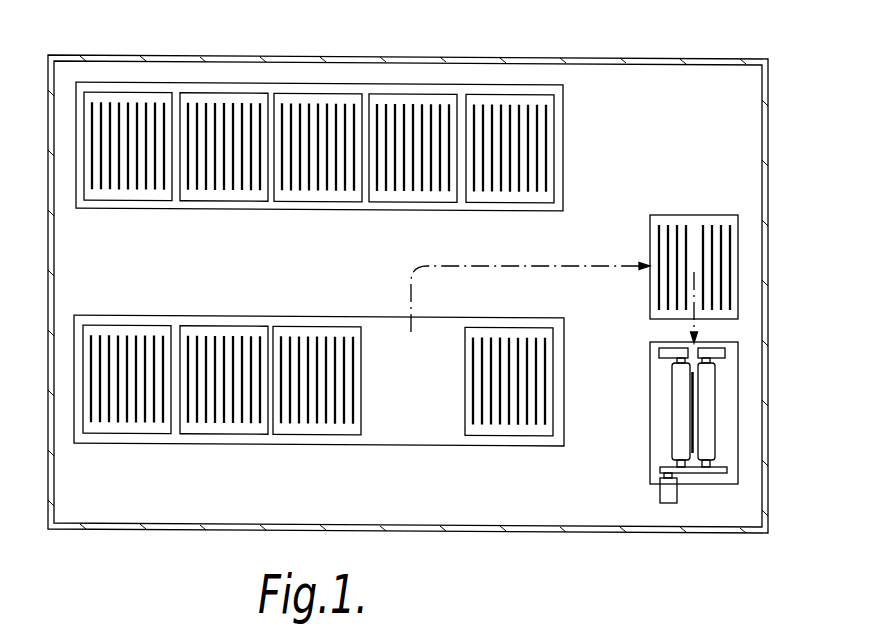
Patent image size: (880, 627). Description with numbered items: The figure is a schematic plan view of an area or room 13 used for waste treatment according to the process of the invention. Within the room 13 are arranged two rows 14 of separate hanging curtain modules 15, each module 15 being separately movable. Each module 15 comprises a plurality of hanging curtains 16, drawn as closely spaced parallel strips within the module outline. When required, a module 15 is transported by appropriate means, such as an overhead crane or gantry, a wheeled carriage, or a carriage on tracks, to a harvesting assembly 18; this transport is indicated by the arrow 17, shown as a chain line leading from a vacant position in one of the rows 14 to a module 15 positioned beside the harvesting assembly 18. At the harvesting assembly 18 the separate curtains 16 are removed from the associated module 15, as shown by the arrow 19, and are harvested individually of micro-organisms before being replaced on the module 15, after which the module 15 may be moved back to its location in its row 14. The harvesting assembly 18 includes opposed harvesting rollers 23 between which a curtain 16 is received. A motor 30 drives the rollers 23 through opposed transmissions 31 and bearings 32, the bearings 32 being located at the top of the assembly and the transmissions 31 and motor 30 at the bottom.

The area or room 13 is at (32, 212).
The rows 14 is at (268, 72).
The hanging curtain module 15 is at (556, 121).
The hanging curtain 16 is at (547, 159).
The arrow 17 is at (607, 264).
The harvesting assembly 18 is at (753, 392).
The arrow 19 is at (698, 337).
The harvesting rollers 23 is at (703, 413).
The motor 30 is at (666, 503).
The transmissions 31 is at (722, 474).
The bearings 32 is at (725, 353).